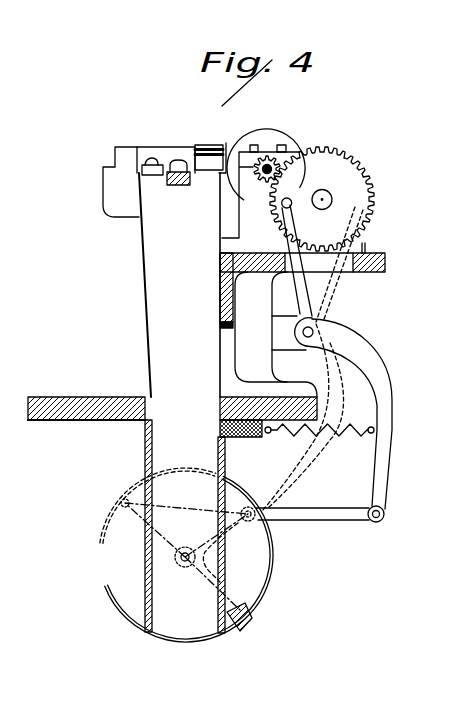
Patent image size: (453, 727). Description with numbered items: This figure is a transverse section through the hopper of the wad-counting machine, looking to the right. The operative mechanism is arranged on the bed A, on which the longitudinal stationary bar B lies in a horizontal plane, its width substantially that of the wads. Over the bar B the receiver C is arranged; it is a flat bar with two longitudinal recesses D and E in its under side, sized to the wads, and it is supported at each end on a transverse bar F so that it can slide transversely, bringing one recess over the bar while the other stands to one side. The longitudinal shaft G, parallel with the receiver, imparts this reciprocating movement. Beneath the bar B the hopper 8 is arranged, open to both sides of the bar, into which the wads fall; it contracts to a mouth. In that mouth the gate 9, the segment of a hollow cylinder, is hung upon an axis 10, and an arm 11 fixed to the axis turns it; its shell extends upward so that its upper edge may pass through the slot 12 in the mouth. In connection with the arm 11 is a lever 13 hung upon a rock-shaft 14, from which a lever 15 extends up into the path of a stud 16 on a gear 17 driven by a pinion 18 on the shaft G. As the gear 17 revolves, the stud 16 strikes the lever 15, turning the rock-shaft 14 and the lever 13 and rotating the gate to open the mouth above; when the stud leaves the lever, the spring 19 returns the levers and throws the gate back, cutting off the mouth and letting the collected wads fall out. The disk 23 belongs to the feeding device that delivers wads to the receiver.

The hopper 8 is at (178, 272).
The gate 9 is at (116, 503).
The axis 10 is at (183, 563).
The arm 11 is at (246, 523).
The slot 12 is at (185, 526).
The lever 13 is at (300, 466).
The rock-shaft 14 is at (323, 322).
The lever 15 is at (322, 263).
The stud 16 is at (292, 197).
The gear 17 is at (322, 199).
The pinion 18 is at (263, 174).
The spring 19 is at (328, 436).
The disk 23 is at (70, 182).
The bed A is at (28, 406).
The longitudinal stationary bar B is at (178, 179).
The receiver C is at (162, 165).
The recess D is at (190, 175).
The recess E is at (152, 176).
The transverse bar F is at (209, 150).
The longitudinal shaft G is at (268, 165).